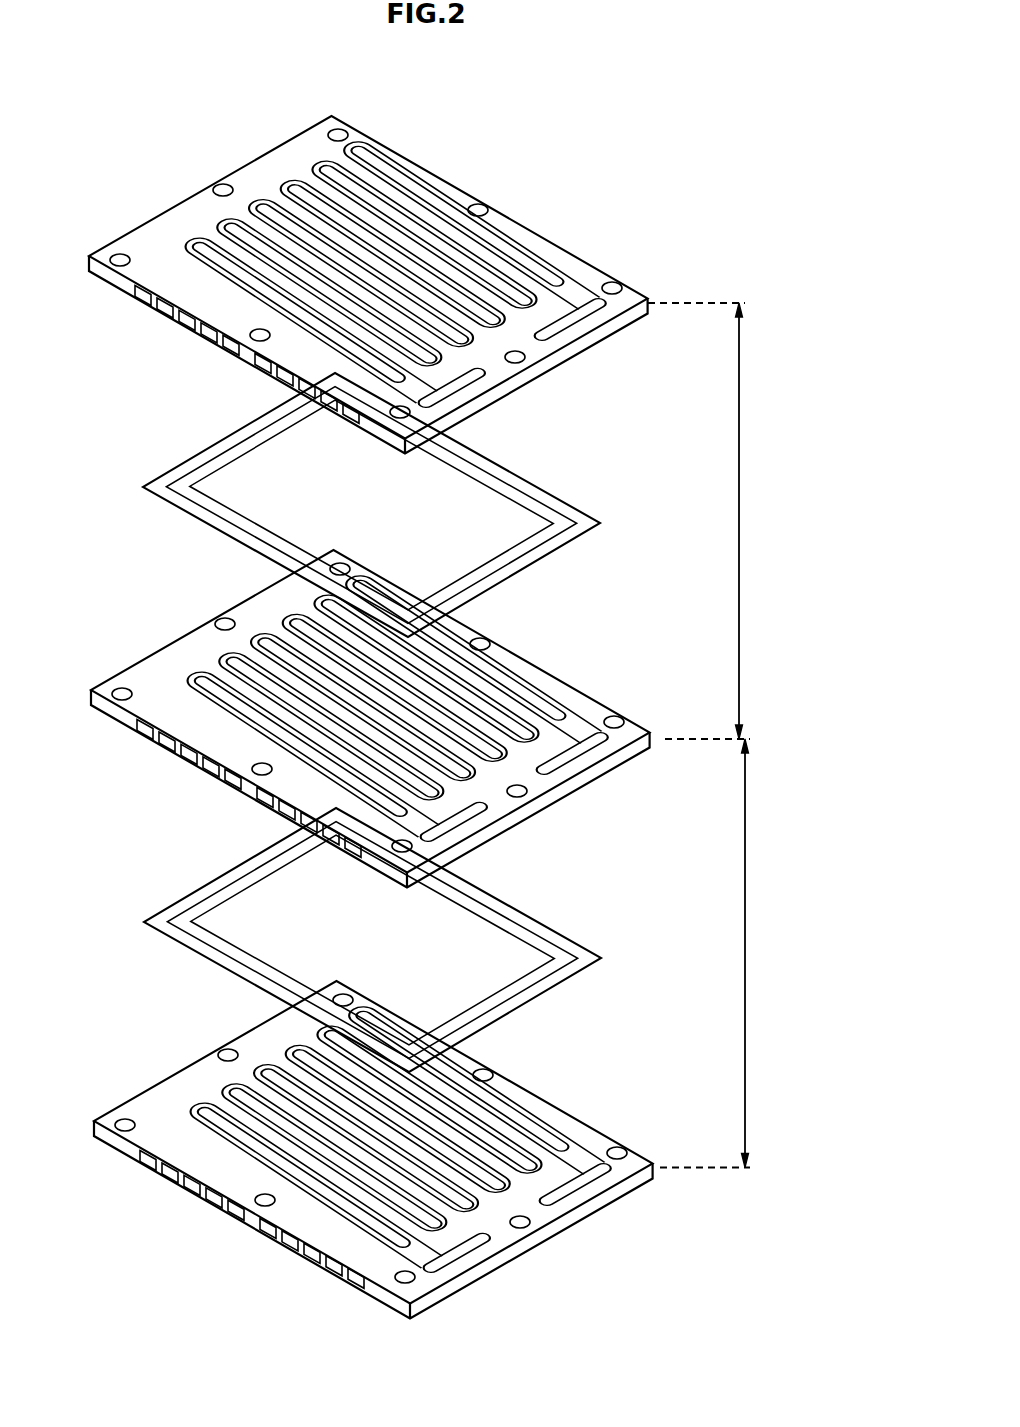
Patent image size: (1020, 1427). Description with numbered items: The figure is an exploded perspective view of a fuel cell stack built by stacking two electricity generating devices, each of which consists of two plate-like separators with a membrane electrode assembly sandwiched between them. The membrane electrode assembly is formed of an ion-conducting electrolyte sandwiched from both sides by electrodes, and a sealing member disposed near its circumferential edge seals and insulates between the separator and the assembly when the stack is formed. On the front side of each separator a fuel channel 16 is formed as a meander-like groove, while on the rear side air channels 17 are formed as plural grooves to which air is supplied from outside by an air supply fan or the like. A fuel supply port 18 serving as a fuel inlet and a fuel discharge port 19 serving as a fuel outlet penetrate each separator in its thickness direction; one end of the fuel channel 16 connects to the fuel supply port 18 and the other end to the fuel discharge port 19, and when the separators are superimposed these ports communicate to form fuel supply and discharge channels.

The fuel channel 16 is at (495, 252).
The air channels 17 is at (168, 311).
The fuel supply port 18 is at (577, 320).
The fuel discharge port 19 is at (467, 384).